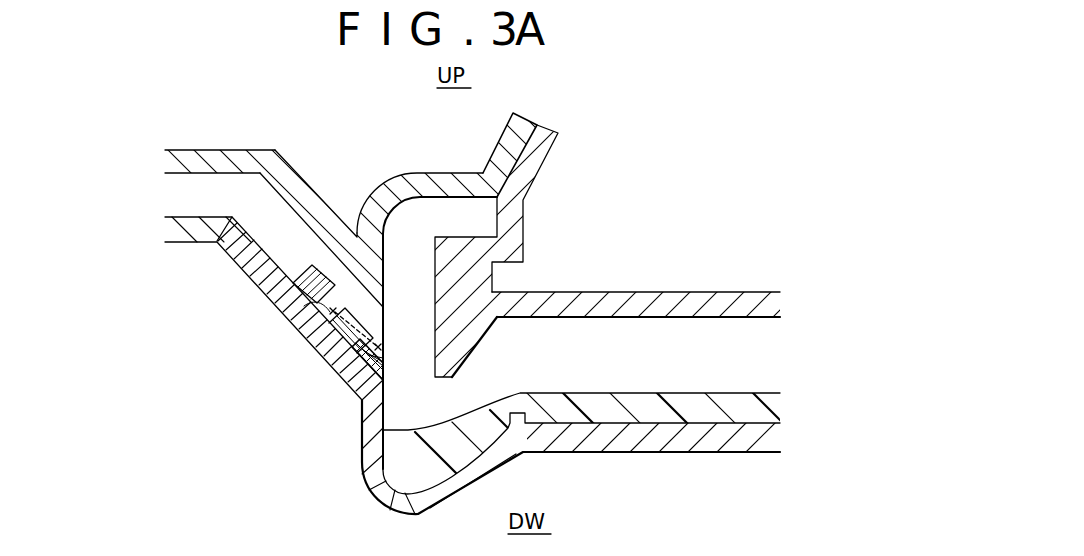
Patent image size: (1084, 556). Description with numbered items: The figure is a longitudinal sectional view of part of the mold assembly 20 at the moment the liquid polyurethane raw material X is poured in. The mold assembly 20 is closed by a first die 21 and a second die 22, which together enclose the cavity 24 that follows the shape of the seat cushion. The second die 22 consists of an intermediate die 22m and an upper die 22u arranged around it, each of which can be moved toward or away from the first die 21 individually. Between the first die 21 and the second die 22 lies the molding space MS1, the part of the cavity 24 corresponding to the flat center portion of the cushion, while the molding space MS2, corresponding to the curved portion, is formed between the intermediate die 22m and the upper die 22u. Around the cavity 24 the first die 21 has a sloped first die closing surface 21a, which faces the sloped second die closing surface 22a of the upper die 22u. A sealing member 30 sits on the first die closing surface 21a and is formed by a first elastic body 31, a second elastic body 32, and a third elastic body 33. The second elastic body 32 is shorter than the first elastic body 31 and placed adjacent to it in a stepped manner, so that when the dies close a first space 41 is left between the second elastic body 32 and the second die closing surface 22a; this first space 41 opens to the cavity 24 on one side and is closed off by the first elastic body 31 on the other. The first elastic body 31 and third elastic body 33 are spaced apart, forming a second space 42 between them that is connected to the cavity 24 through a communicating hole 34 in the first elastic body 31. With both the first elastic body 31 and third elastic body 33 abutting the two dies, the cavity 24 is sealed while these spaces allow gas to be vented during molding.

The mold assembly 20 is at (603, 163).
The first die 21 is at (190, 236).
The first die closing surface 21a is at (277, 256).
The second die 22 is at (428, 278).
The upper die 22u is at (193, 162).
The second die closing surface 22a is at (300, 226).
The intermediate die 22m is at (528, 168).
The cavity 24 is at (619, 255).
The molding space MS1 is at (690, 356).
The molding space MS2 is at (405, 261).
The sealing member 30 is at (303, 465).
The first elastic body 31 is at (330, 342).
The second elastic body 32 is at (362, 372).
The third elastic body 33 is at (296, 305).
The communicating hole 34 is at (372, 328).
The first space 41 is at (358, 355).
The second space 42 is at (312, 318).
The polyurethane raw material X is at (645, 410).